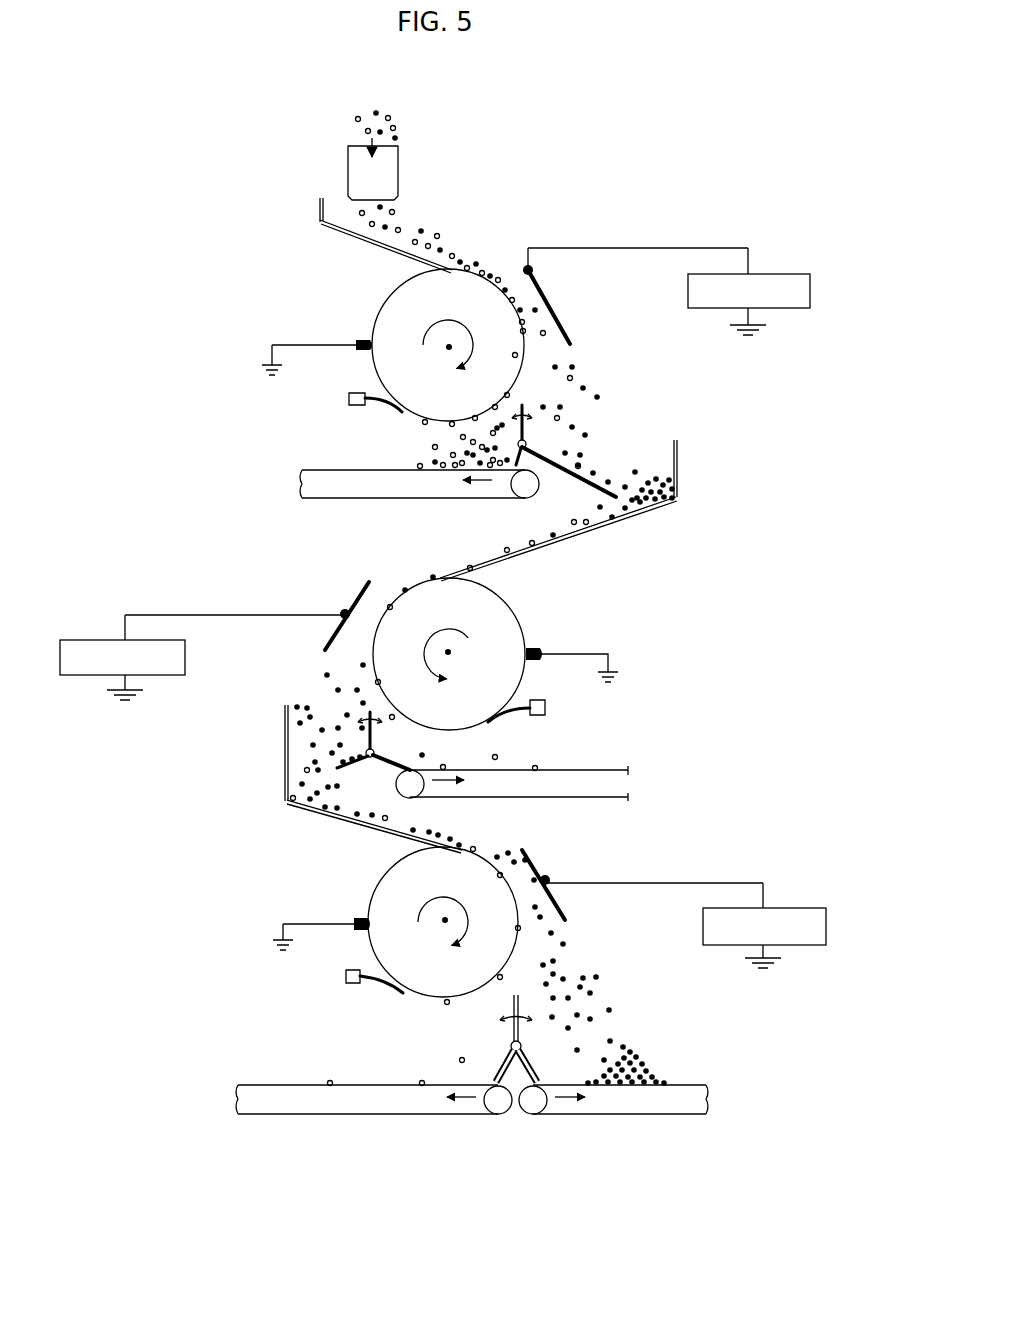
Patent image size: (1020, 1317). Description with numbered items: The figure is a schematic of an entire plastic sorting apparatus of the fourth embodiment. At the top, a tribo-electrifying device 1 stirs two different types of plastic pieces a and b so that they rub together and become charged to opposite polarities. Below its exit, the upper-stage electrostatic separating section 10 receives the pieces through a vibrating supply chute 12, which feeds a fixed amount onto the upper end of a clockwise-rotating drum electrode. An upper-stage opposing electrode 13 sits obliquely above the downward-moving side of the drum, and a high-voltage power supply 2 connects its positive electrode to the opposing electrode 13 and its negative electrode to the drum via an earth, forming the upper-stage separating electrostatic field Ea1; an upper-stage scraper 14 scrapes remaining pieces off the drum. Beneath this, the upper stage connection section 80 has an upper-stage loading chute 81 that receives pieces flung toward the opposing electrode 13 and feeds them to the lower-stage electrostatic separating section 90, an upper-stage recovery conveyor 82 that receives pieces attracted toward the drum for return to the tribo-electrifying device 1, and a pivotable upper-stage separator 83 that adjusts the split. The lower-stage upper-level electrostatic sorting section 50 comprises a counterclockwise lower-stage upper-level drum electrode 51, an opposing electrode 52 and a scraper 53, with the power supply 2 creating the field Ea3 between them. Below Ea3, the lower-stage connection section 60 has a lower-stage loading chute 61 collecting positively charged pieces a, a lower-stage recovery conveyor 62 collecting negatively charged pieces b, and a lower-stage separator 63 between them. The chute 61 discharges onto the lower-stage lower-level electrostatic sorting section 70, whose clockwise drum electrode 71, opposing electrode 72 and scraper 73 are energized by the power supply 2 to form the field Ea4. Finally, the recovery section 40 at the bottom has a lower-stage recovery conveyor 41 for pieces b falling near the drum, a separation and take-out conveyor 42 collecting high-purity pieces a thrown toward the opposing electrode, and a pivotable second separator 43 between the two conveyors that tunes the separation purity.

The tribo-electrifying device 1 is at (398, 175).
The high-voltage power supply 2 is at (797, 278).
The upper-stage electrostatic separating section 10 is at (522, 236).
The supply chute 12 is at (378, 242).
The upper-stage opposing electrode 13 is at (555, 308).
The upper-stage scraper 14 is at (402, 414).
The recovery section 40 is at (512, 1130).
The lower-stage recovery conveyor 41 is at (298, 1085).
The separation and take-out conveyor 42 is at (675, 1085).
The second separator 43 is at (512, 1033).
The lower-stage upper-level electrostatic sorting section 50 is at (400, 578).
The lower-stage upper-level drum electrode 51 is at (513, 608).
The lower-stage upper-level opposing electrode 52 is at (355, 603).
The lower-stage upper-level scraper 53 is at (508, 716).
The lower-stage connection section 60 is at (276, 801).
The lower-stage loading chute 61 is at (337, 814).
The lower-stage recovery conveyor 62 is at (585, 770).
The lower-stage separator 63 is at (352, 710).
The lower-stage lower-level electrostatic sorting section 70 is at (548, 826).
The lower-stage lower-level drum electrode 71 is at (392, 890).
The lower-stage lower-level opposing electrode 72 is at (565, 908).
The lower-stage lower-level scraper 73 is at (390, 986).
The upper stage connection section 80 is at (648, 432).
The upper-stage loading chute 81 is at (622, 518).
The upper-stage recovery conveyor 82 is at (370, 467).
The upper-stage separator 83 is at (527, 432).
The lower-stage electrostatic separating section 90 is at (656, 700).
The plastic pieces a is at (358, 117).
The plastic pieces b is at (377, 111).
The upper-stage separating electrostatic field Ea1 is at (540, 345).
The lower-stage upper-level separating electrostatic field Ea3 is at (345, 652).
The lower-stage lower-level separating electrostatic field Ea4 is at (545, 928).